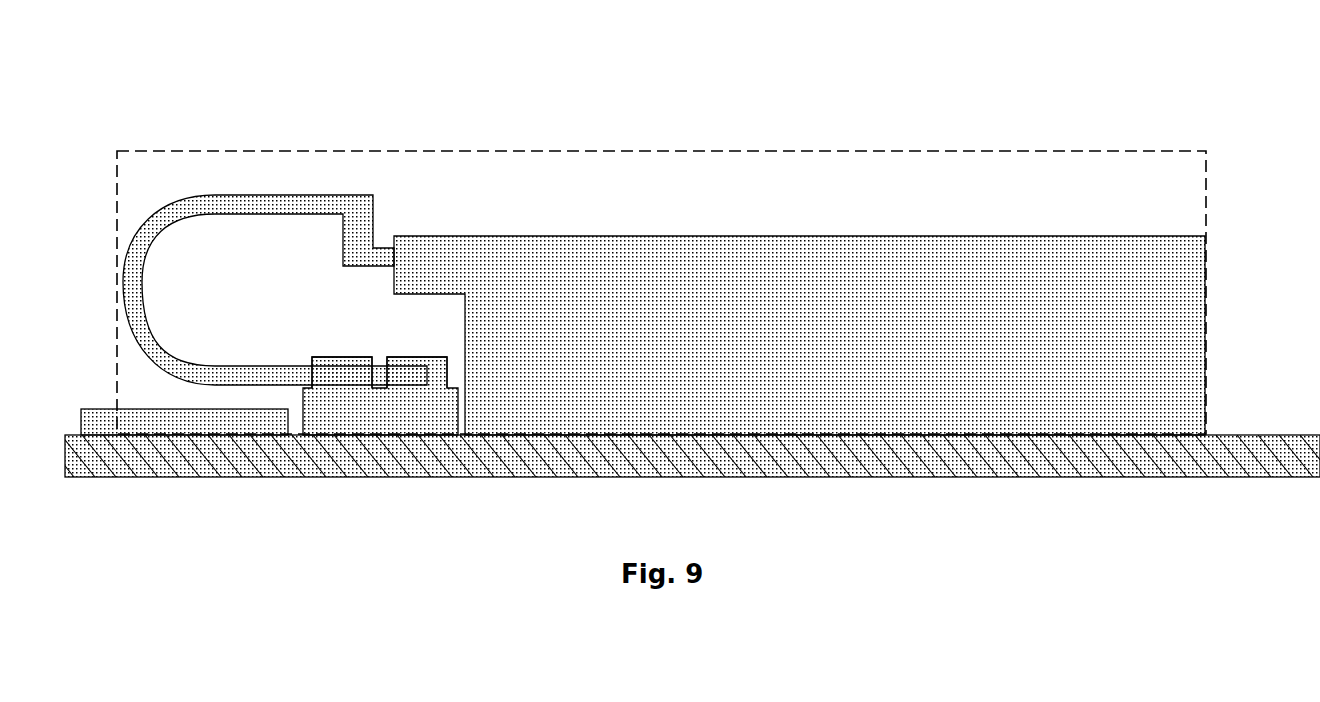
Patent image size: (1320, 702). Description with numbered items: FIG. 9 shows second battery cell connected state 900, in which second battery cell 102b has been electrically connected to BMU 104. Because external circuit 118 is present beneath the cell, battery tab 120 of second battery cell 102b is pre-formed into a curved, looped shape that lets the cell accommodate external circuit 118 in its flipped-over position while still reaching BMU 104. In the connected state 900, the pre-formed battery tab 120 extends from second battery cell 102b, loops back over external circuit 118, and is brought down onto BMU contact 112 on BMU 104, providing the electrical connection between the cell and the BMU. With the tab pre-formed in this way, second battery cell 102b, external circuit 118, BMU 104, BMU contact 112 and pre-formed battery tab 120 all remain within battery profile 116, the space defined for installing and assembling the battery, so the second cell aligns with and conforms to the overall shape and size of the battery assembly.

The second battery cell connected state 900 is at (1001, 547).
The battery profile 116 is at (364, 148).
The external circuit 118 is at (184, 422).
The BMU 104 is at (380, 396).
The BMU contact 112 is at (420, 395).
The pre-formed battery tab 120 is at (180, 235).
The second battery cell 102b is at (799, 335).